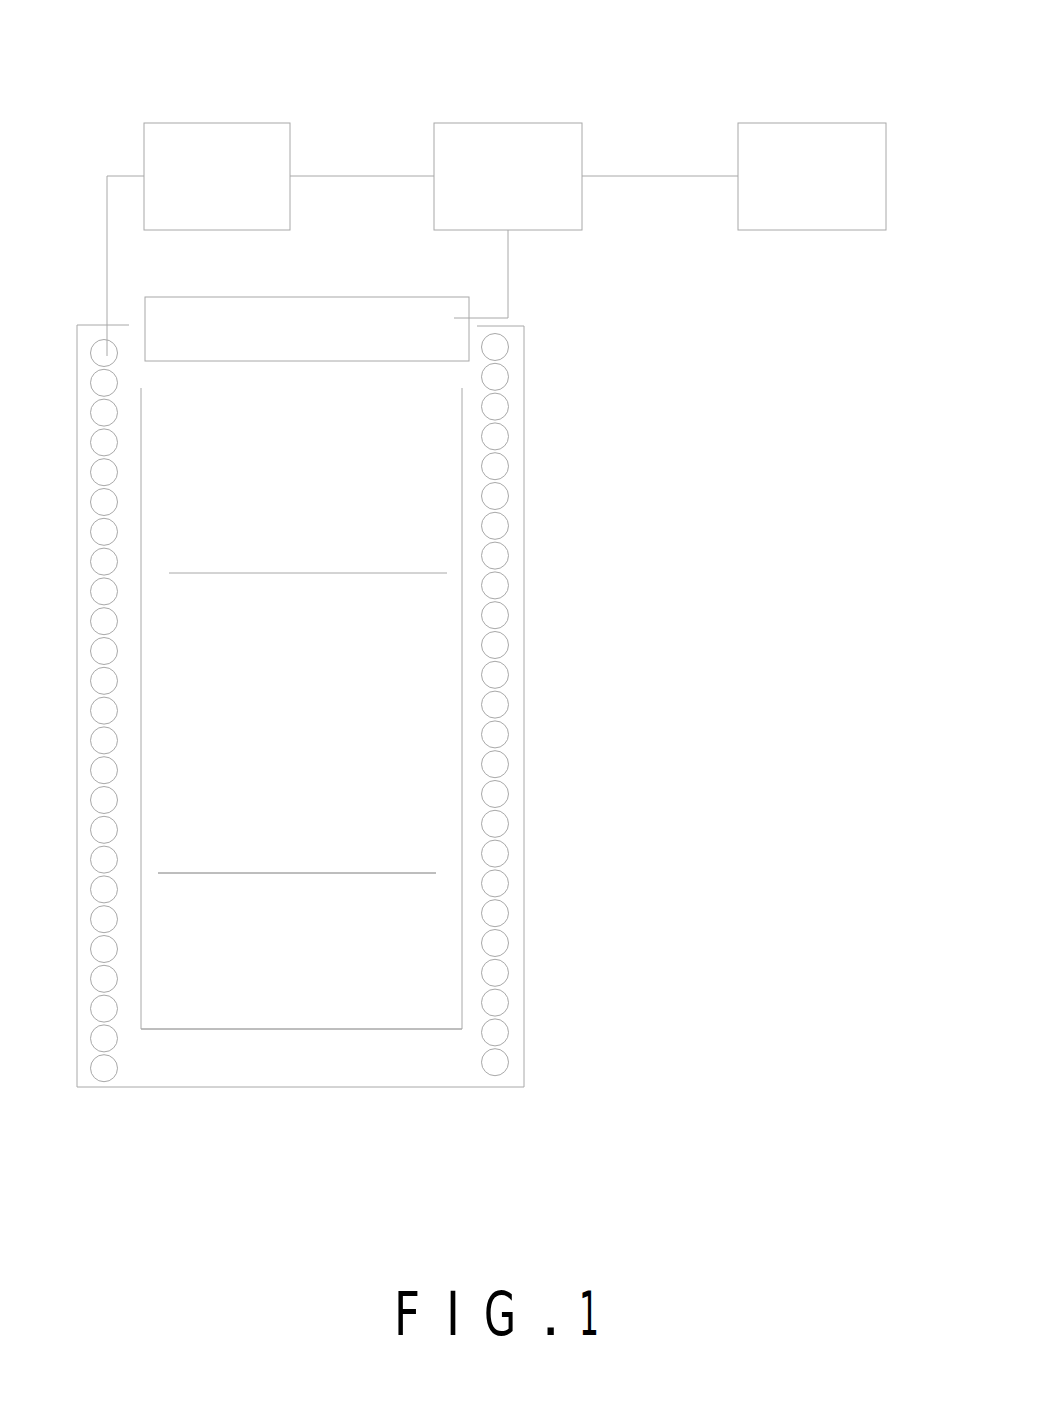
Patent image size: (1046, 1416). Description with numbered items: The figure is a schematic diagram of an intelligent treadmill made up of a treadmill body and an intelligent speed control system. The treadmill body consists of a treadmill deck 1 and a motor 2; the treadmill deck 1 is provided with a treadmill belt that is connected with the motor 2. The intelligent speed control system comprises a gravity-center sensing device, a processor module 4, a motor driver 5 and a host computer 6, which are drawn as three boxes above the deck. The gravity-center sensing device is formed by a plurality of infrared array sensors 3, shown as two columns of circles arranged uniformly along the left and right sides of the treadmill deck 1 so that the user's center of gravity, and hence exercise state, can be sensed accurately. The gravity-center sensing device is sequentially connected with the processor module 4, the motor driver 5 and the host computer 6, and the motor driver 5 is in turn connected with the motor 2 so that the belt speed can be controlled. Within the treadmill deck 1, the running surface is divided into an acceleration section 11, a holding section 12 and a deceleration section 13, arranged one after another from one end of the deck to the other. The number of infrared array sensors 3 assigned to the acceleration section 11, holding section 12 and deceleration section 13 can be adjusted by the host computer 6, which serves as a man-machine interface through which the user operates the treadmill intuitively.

The treadmill deck 1 is at (584, 385).
The motor 2 is at (292, 325).
The infrared array sensors 3 is at (496, 443).
The processor module 4 is at (213, 172).
The motor driver 5 is at (507, 163).
The host computer 6 is at (813, 168).
The acceleration section 11 is at (414, 486).
The holding section 12 is at (406, 743).
The deceleration section 13 is at (385, 952).